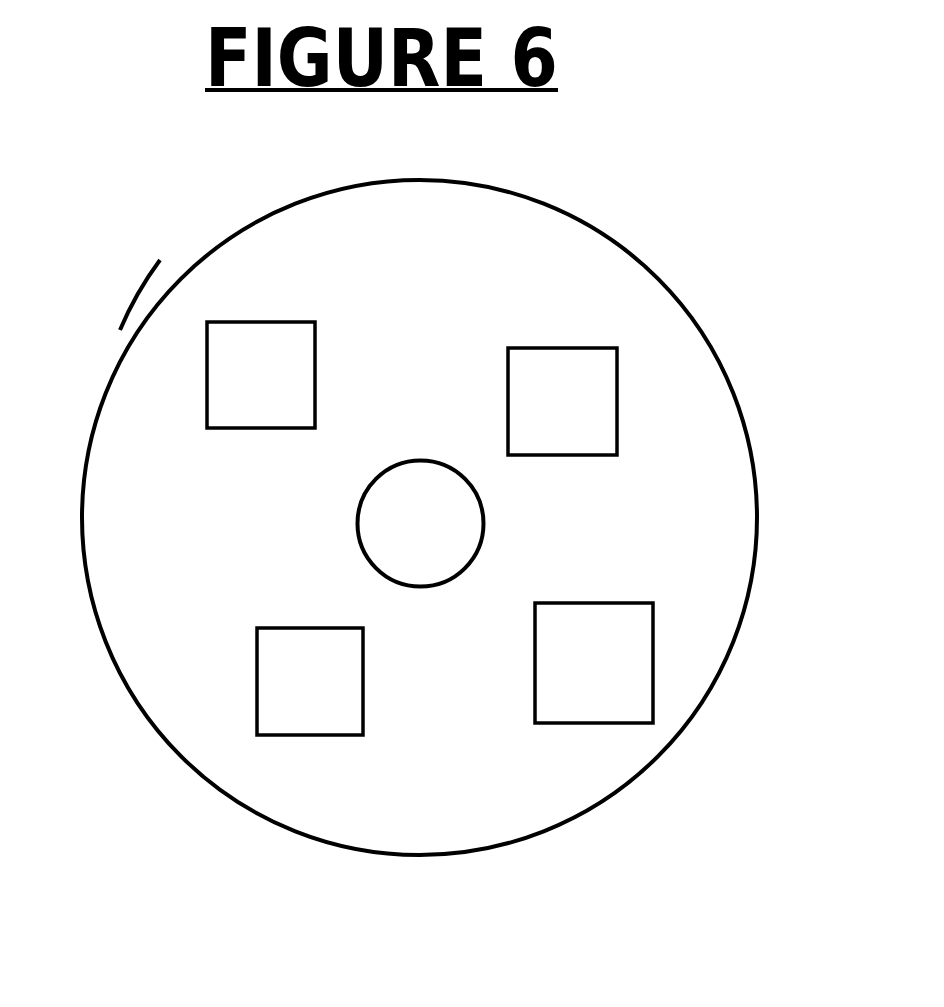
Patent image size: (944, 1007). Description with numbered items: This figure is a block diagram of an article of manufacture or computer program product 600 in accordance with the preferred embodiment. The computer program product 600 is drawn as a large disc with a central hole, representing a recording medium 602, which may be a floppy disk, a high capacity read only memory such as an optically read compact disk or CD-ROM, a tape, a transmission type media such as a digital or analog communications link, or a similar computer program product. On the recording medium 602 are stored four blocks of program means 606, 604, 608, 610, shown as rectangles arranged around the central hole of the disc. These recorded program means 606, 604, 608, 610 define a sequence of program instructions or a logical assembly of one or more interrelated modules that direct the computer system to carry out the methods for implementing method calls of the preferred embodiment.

The computer program product 600 is at (708, 298).
The recording medium 602 is at (142, 325).
The program means 604 is at (310, 681).
The program means 606 is at (594, 663).
The program means 608 is at (562, 401).
The program means 610 is at (261, 375).